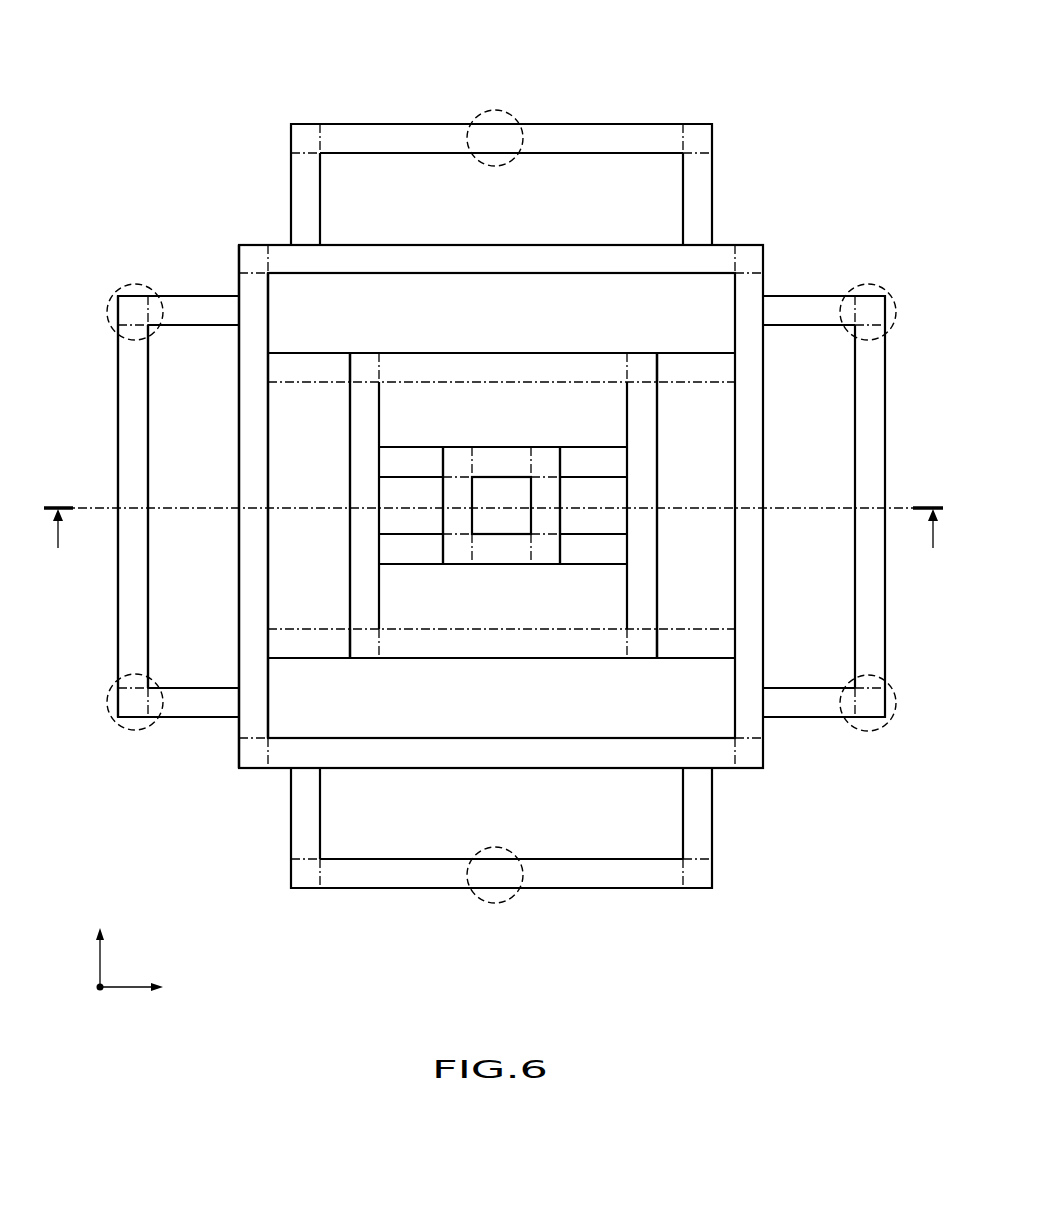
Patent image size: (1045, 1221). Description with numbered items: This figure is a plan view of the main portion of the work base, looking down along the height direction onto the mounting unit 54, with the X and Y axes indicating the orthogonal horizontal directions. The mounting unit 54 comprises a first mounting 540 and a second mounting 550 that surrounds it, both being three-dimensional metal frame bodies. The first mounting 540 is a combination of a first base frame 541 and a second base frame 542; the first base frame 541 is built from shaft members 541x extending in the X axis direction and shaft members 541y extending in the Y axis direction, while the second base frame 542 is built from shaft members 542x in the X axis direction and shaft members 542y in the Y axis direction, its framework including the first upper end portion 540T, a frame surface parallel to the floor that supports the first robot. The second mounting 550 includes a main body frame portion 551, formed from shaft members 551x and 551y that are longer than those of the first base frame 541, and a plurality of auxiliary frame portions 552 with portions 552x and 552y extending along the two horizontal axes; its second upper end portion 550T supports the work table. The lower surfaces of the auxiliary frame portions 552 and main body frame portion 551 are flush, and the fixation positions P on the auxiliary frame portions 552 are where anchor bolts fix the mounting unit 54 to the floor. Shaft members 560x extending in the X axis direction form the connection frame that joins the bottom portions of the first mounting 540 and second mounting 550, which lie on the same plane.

The mounting unit 54 is at (802, 110).
The first mounting 540 is at (598, 66).
The first base frame 541 is at (565, 367).
The shaft members 541x is at (552, 640).
The shaft members 541y is at (650, 594).
The second base frame 542 is at (465, 456).
The shaft members 542x is at (483, 560).
The shaft members 542y is at (552, 495).
The first upper end portion 540T is at (458, 487).
The second mounting 550 is at (138, 136).
The main body frame portion 551 is at (263, 252).
The shaft members 551x is at (387, 760).
The shaft members 551y is at (237, 602).
The second upper end portion 550T is at (257, 403).
The auxiliary frame portions 552 is at (180, 298).
The x-direction portion of stage arm 552x is at (177, 717).
The y-direction portion of stage arm 552y is at (118, 448).
The shaft members 560x is at (313, 368).
The fixation positions P is at (122, 286).